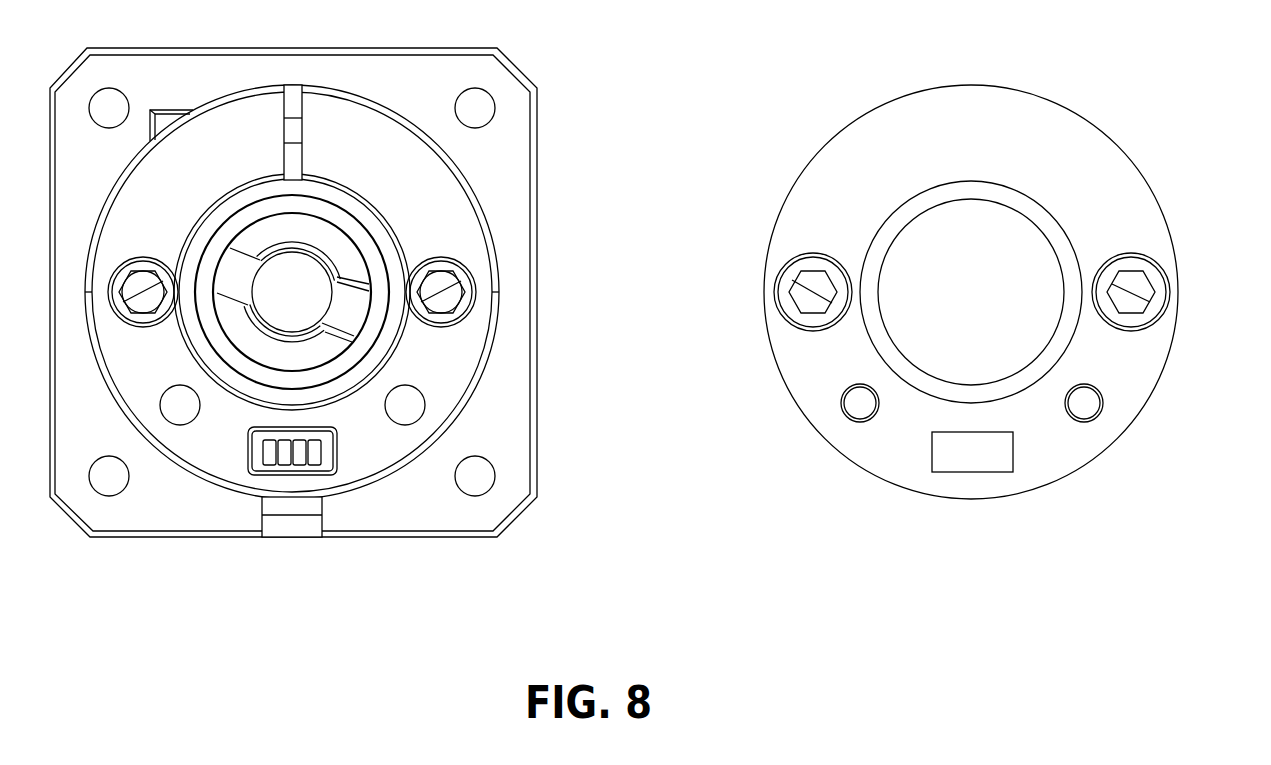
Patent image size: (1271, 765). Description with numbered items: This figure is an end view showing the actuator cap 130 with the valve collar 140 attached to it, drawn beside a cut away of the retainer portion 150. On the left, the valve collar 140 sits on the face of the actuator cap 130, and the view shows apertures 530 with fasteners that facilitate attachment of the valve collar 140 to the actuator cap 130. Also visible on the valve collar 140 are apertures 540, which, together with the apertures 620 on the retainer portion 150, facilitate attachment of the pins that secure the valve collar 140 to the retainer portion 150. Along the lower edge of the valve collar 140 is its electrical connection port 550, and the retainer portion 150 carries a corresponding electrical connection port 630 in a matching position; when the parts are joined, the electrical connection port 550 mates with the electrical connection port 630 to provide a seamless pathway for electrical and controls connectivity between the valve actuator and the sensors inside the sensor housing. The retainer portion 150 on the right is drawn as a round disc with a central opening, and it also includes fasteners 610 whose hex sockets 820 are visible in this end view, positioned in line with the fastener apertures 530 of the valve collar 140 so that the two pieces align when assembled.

The actuator cap 130 is at (537, 105).
The valve collar 140 is at (488, 223).
The apertures 530 is at (475, 305).
The apertures 540 is at (418, 418).
The electrical connection port 550 is at (340, 455).
The retainer portion 150 is at (1050, 97).
The screw 610 is at (1157, 261).
The hex socket 820 is at (1146, 301).
The apertures 620 is at (1097, 418).
The electrical connection port 630 is at (970, 472).